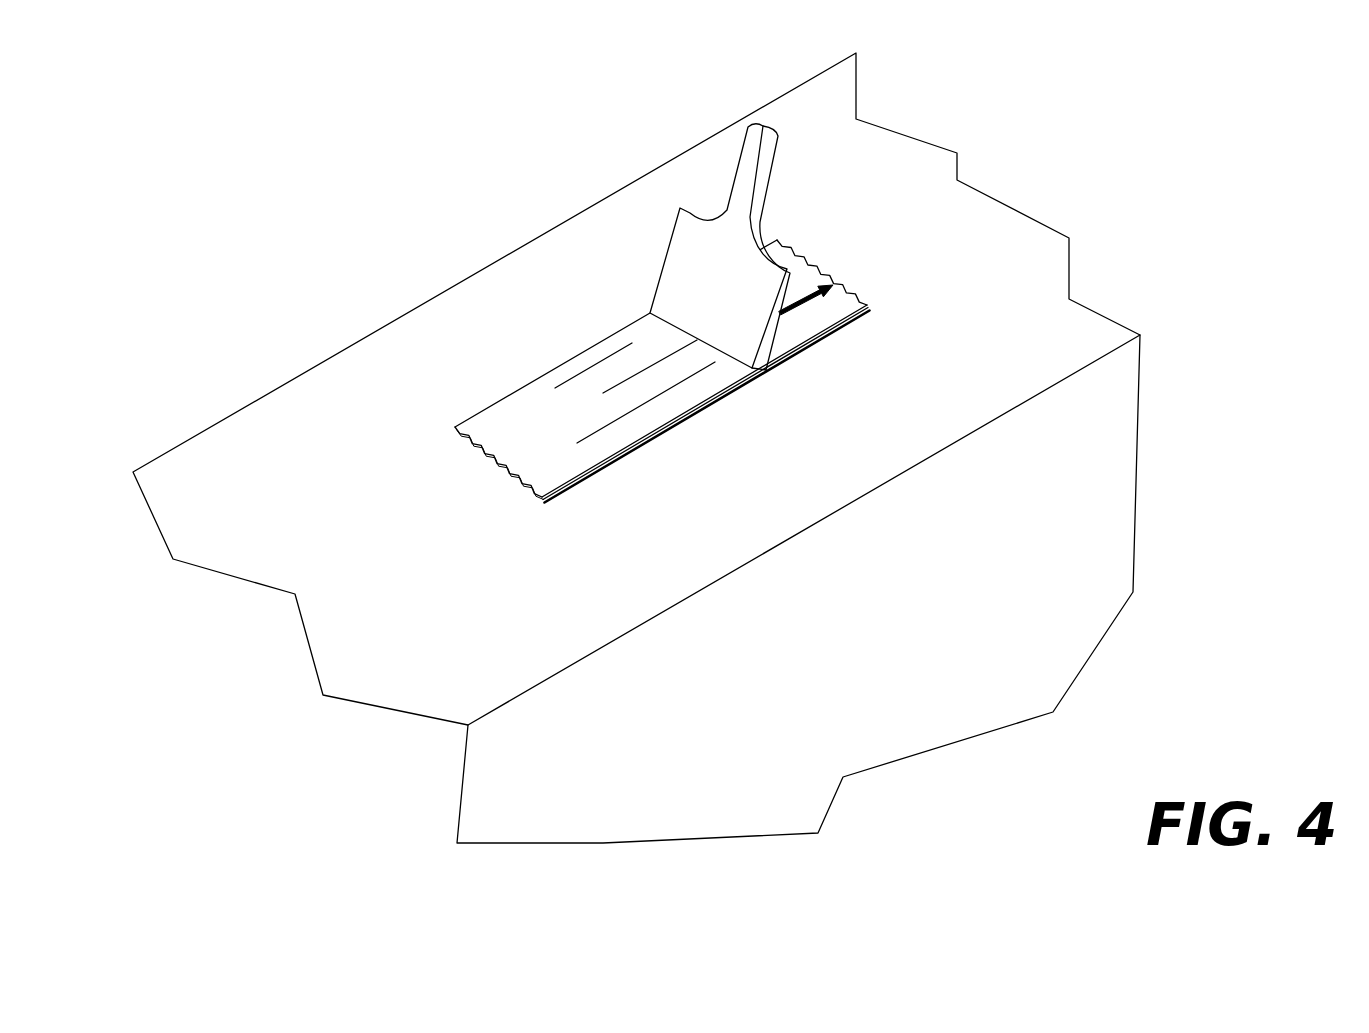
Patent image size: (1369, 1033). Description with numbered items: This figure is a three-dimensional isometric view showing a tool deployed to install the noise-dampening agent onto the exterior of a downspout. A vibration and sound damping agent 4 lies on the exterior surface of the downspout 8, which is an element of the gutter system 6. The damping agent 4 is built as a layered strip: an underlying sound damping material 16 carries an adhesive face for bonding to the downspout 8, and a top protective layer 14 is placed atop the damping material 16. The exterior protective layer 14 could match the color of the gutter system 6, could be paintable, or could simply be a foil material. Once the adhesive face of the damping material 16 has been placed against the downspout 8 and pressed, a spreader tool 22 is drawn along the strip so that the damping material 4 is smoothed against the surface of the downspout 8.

The vibration and sound damping agent 4 is at (662, 371).
The gutter system 6 is at (636, 448).
The downspout 8 is at (892, 452).
The top protective layer 14 is at (698, 407).
The sound damping material 16 is at (687, 415).
The spreader tool 22 is at (757, 160).